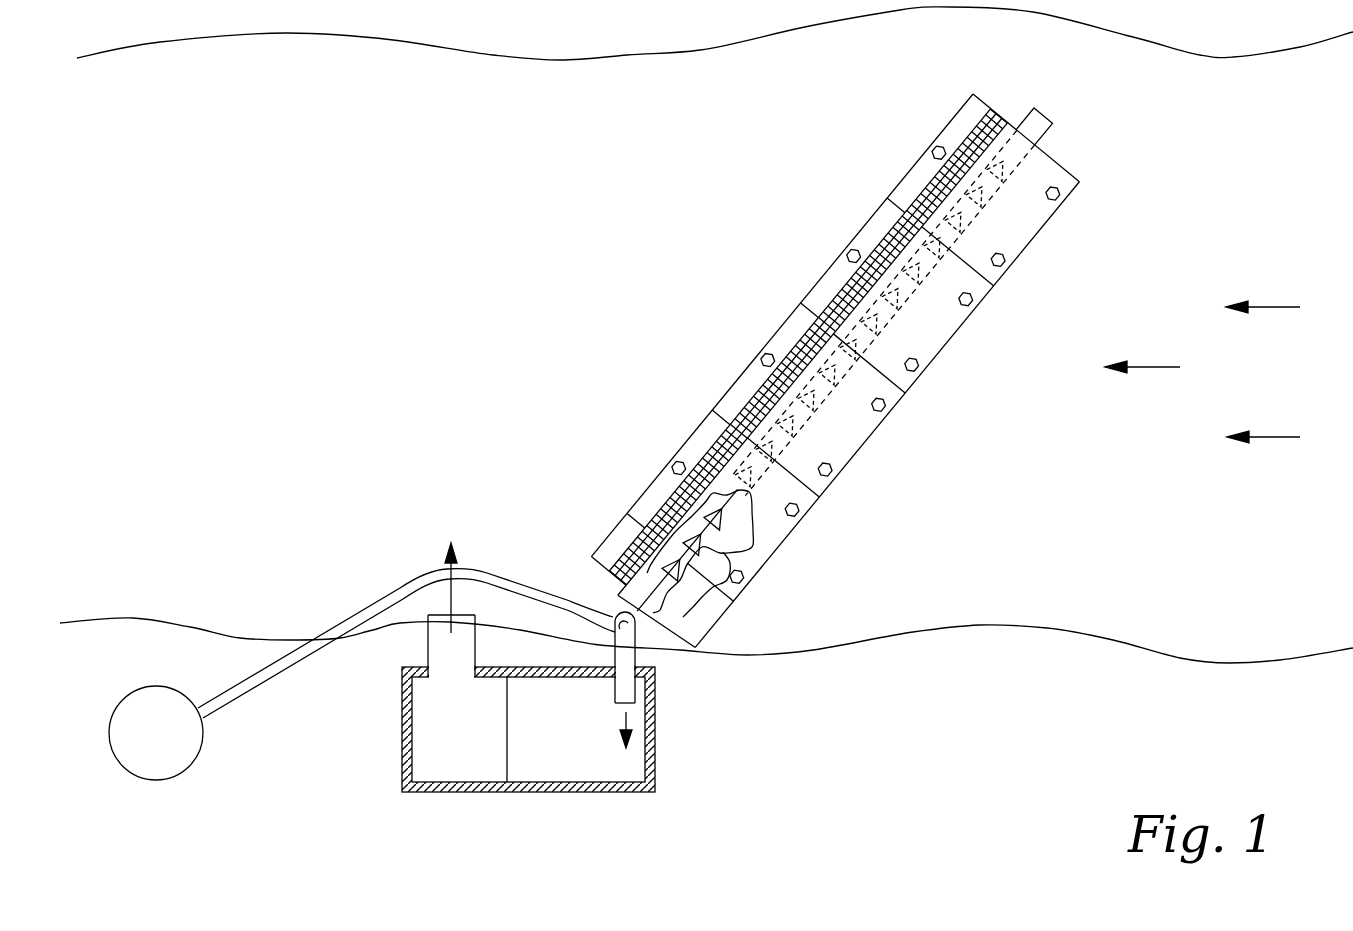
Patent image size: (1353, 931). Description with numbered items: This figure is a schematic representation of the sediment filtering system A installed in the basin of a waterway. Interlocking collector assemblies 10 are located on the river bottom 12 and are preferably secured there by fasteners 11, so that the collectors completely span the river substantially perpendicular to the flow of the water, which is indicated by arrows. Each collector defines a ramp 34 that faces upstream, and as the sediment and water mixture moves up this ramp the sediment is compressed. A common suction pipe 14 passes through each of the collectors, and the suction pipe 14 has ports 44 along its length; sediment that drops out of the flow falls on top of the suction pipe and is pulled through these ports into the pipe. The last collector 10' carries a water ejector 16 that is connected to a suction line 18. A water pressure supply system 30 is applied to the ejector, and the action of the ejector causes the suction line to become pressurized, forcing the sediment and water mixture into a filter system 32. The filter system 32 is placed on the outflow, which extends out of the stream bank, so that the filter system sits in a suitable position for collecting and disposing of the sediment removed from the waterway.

The sediment filtering system A is at (820, 175).
The interlocking collector assemblies 10 is at (794, 311).
The last collector 10' is at (595, 519).
The fasteners 11 is at (977, 307).
The river bottom 12 is at (500, 327).
The suction pipe 14 is at (692, 543).
The water ejector 16 is at (590, 632).
The suction line 18 is at (635, 617).
The water pressure supply system 30 is at (200, 752).
The filter system 32 is at (600, 797).
The ramp 34 is at (1032, 223).
The ports 44 is at (750, 573).